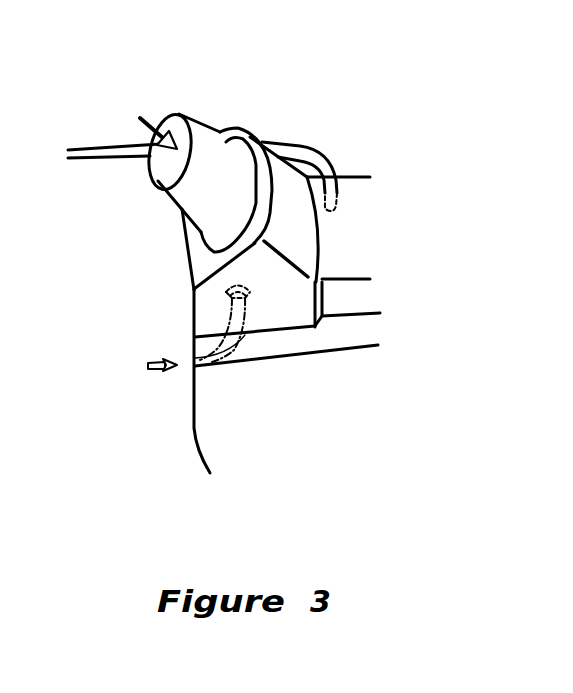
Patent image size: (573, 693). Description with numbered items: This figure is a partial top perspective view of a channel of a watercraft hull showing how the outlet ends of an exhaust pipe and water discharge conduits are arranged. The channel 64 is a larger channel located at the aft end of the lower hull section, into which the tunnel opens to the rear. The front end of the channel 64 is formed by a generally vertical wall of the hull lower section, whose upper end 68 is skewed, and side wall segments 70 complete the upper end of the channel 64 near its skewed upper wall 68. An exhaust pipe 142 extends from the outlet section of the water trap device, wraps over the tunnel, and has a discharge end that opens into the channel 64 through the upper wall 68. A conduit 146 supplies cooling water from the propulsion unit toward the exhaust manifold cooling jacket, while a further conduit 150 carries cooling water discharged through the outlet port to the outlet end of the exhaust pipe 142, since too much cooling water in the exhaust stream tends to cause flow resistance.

The channel 64 is at (357, 192).
The upper end of the channel front wall 68 is at (250, 128).
The side wall segments 70 is at (275, 272).
The exhaust pipe 142 is at (202, 143).
The conduit 146 is at (102, 148).
The conduit 150 is at (178, 381).